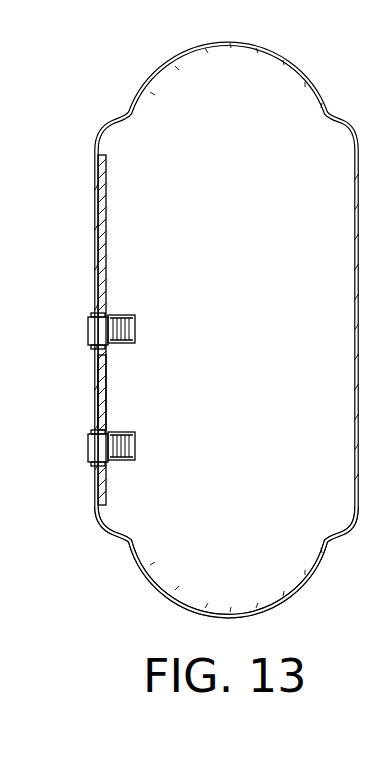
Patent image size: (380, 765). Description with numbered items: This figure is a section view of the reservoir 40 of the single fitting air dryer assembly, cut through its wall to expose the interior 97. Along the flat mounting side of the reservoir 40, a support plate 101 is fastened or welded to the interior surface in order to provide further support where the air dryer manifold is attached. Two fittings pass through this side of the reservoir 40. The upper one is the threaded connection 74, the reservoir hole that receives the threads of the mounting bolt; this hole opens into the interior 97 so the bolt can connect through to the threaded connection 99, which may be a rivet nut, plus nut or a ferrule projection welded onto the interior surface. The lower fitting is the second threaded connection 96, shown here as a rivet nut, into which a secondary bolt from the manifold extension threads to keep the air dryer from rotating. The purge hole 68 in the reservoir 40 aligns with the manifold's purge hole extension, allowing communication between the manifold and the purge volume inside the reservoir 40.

The reservoir 40 is at (237, 328).
The support plate 101 is at (103, 247).
The threaded connection 74 is at (97, 341).
The threaded connection 99 is at (117, 345).
The purge hole 68 is at (93, 377).
The second threaded connection 96 is at (80, 457).
The interior 97 is at (280, 537).